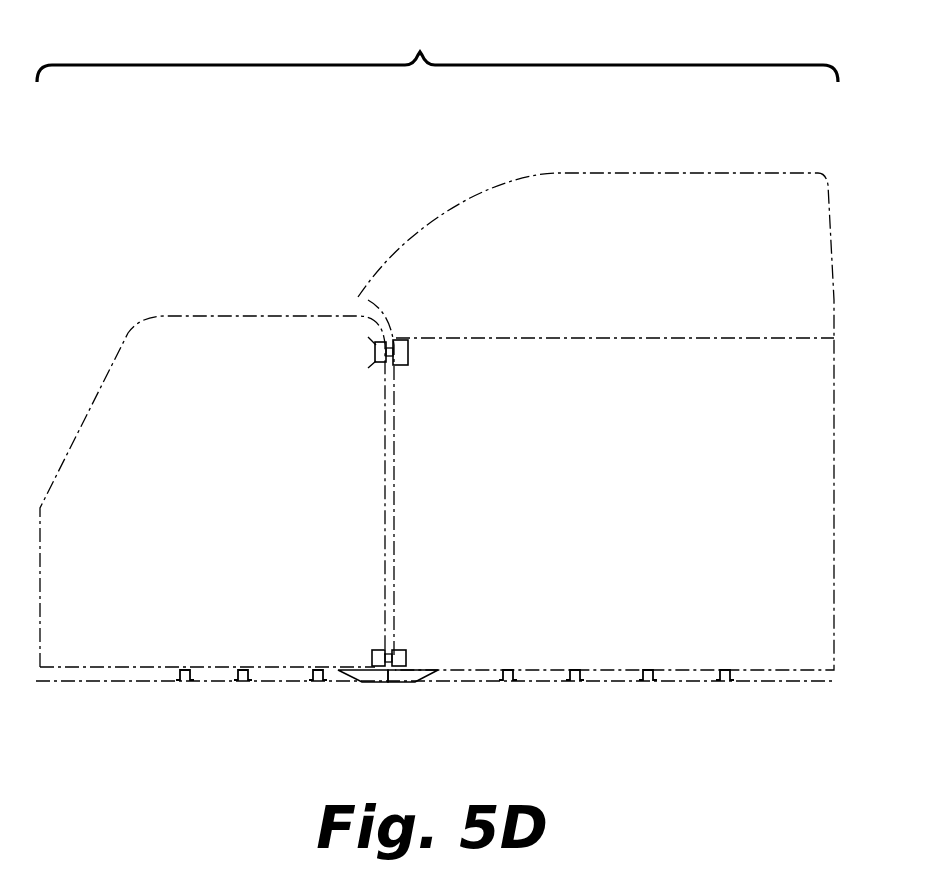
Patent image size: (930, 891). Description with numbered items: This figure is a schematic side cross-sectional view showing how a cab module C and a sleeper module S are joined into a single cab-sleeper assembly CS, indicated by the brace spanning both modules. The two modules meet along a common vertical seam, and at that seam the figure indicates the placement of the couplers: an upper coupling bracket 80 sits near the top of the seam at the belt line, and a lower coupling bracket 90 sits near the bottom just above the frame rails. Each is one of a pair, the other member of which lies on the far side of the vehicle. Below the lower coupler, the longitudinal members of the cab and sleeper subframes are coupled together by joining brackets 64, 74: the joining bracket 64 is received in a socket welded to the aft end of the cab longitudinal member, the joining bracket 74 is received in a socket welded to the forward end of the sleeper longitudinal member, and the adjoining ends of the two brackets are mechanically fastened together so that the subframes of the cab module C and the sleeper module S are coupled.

The cab-sleeper assembly CS is at (437, 50).
The cab module C is at (216, 282).
The sleeper module S is at (779, 150).
The upper coupling bracket 80 is at (414, 350).
The lower coupling bracket 90 is at (414, 659).
The joining bracket 64 is at (363, 698).
The joining bracket 74 is at (401, 700).